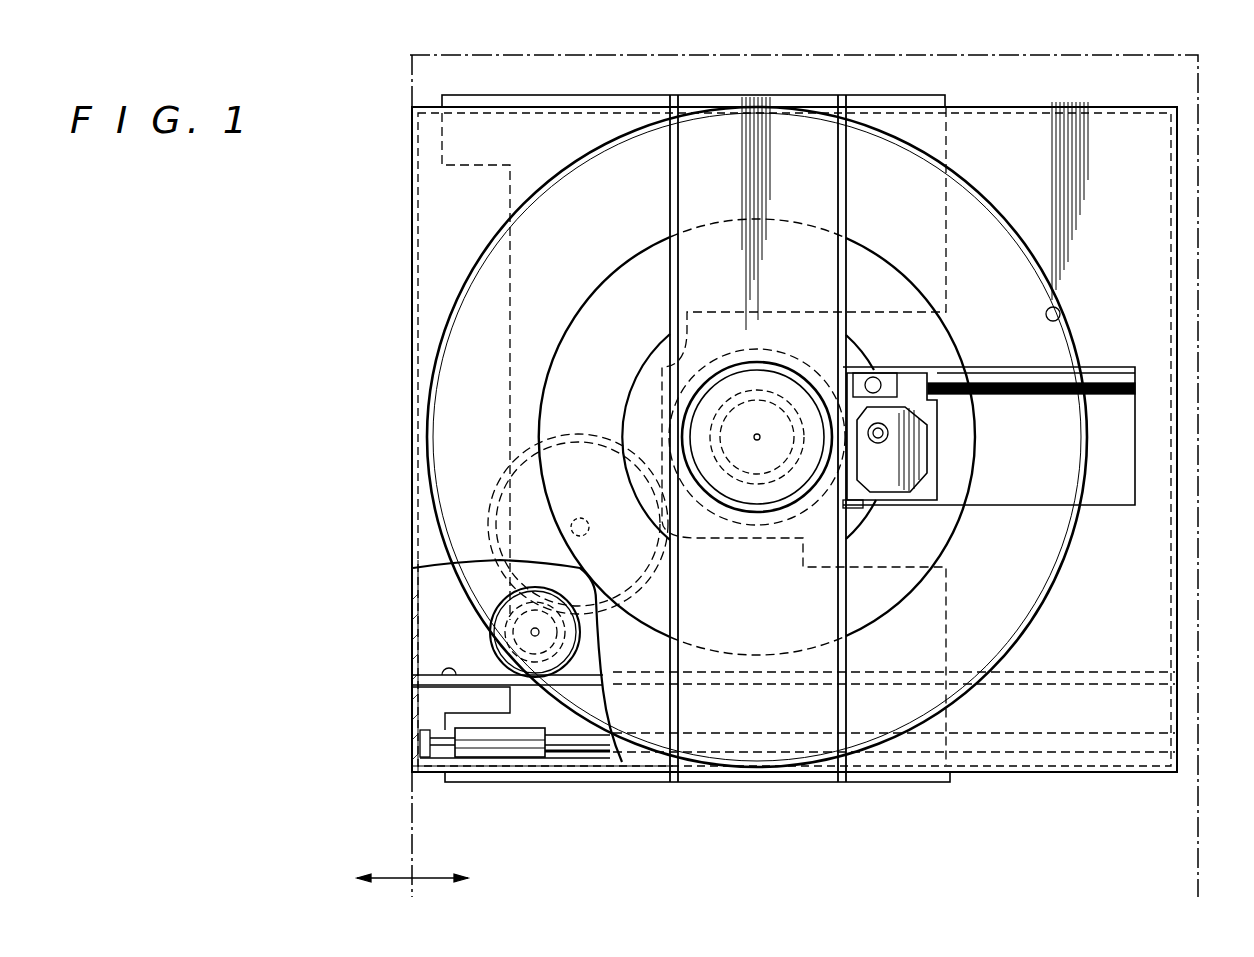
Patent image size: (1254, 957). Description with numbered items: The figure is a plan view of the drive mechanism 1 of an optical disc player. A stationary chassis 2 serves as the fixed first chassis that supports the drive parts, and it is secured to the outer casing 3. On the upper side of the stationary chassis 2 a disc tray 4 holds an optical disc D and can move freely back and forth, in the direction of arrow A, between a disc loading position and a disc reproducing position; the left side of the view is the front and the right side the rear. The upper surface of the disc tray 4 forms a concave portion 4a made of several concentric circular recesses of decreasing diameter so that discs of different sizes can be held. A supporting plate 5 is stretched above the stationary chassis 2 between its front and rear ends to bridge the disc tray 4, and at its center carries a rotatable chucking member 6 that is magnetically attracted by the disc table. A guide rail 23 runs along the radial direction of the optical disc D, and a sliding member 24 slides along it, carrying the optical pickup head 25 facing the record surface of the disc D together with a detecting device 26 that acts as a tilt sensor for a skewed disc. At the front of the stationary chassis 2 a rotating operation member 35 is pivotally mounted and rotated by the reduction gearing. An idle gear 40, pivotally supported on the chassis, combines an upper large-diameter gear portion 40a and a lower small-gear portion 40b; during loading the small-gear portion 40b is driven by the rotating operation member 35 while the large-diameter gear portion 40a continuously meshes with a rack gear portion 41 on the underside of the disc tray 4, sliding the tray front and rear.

The drive mechanism 1 is at (790, 833).
The stationary chassis 2 is at (510, 325).
The outer casing 3 is at (1200, 108).
The disc tray 4 is at (432, 212).
The concave portion 4a is at (1060, 312).
The supporting plate 5 is at (703, 135).
The chucking member 6 is at (765, 375).
The guide rail 23 is at (1060, 395).
The sliding member 24 is at (925, 413).
The optical pickup head 25 is at (915, 467).
The detecting device 26 is at (873, 380).
The rotating operation member 35 is at (500, 484).
The idle gear 40 is at (490, 620).
The large-diameter gear portion 40a is at (470, 640).
The small-gear portion 40b is at (495, 604).
The rack gear portion 41 is at (413, 695).
The arrow A is at (412, 868).
The optical disc D is at (1003, 220).